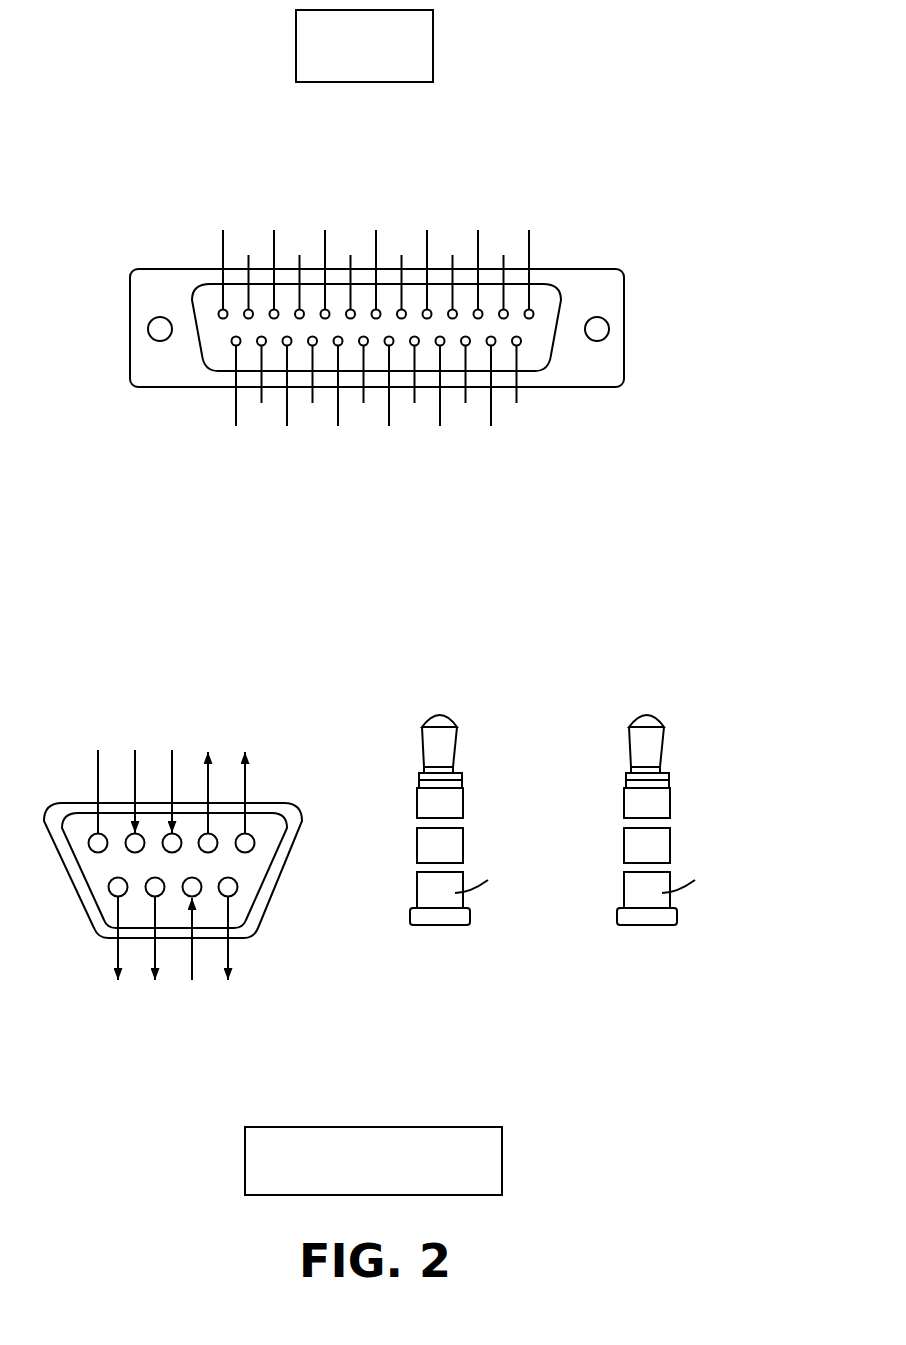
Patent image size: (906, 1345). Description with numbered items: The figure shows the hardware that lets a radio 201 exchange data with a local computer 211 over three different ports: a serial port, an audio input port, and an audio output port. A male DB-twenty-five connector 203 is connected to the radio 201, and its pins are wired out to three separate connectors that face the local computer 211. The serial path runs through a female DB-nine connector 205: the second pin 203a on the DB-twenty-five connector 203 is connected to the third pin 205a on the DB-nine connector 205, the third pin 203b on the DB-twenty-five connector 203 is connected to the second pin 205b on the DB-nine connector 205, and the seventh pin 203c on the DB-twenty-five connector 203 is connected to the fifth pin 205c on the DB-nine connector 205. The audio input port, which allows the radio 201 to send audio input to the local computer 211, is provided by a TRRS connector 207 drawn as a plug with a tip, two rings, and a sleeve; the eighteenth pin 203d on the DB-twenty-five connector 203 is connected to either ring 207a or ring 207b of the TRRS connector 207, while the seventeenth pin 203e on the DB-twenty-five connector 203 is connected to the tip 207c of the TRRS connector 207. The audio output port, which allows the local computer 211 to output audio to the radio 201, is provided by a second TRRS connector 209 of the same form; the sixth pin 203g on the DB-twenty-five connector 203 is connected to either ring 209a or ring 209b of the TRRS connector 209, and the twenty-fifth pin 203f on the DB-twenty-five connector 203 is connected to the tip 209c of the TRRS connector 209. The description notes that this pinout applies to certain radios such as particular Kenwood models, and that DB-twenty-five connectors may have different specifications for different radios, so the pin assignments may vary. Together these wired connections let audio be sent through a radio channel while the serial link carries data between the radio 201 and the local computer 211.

The radio 201 is at (433, 44).
The DB25 connector 203 is at (414, 328).
The Pin 2 on DB25 203a is at (250, 224).
The Pin 3 on DB25 203b is at (275, 198).
The Pin 7 on DB25 203c is at (377, 198).
The Pin 18 on DB25 203d is at (338, 458).
The Pin 17 on DB25 203e is at (312, 435).
The Pin 25 on DB25 203f is at (518, 437).
The Pin 6 on DB25 203g is at (352, 228).
The DB9 connector 205 is at (203, 851).
The Pin 3 on DB9 205a is at (170, 722).
The Pin 2 on DB9 205b is at (207, 722).
The Pin 5 on DB9 205c is at (98, 722).
The TRRS connector 207 is at (476, 855).
The Ring 207a is at (455, 805).
The Ring 207b is at (455, 855).
The Tip 207c is at (448, 755).
The TRRS connector 209 is at (678, 855).
The Ring 209a is at (662, 805).
The Ring 209b is at (662, 855).
The Tip 209c is at (655, 755).
The local computer 211 is at (502, 1162).